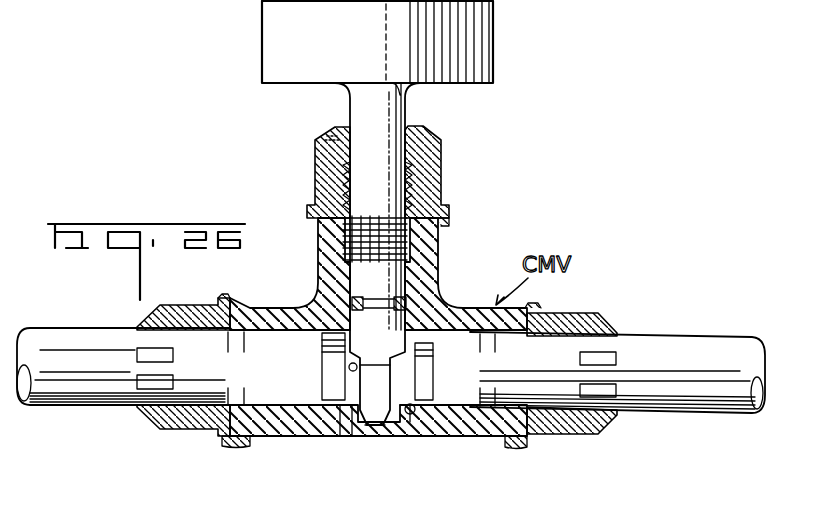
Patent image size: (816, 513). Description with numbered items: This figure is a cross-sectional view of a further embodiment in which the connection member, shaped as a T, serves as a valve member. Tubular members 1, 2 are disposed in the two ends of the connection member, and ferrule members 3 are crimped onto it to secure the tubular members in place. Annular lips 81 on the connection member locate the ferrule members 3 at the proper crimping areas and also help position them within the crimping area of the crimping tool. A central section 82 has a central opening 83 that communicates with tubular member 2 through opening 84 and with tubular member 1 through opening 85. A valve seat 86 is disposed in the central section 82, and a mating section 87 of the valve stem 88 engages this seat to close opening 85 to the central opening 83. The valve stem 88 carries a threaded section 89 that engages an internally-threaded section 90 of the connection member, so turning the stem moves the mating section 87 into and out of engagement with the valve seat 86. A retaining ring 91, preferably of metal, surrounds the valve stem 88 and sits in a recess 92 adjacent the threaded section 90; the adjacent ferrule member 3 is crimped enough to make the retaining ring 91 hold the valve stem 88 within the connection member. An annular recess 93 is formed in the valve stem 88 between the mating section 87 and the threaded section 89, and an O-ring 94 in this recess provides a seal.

The tubular member 1 is at (62, 392).
The tubular member 2 is at (690, 398).
The ferrule member 3 is at (315, 180).
The annular lip 81 is at (446, 224).
The central section 82 is at (346, 436).
The central opening 83 is at (378, 428).
The opening 84 is at (412, 416).
The opening 85 is at (340, 350).
The valve seat 86 is at (350, 368).
The mating section 87 is at (402, 362).
The valve stem 88 is at (402, 110).
The threaded section 89 is at (345, 250).
The internally-threaded section 90 is at (412, 190).
The retaining ring 91 is at (331, 138).
The recess 92 is at (414, 160).
The annular recess 93 is at (312, 295).
The O-ring 94 is at (408, 292).